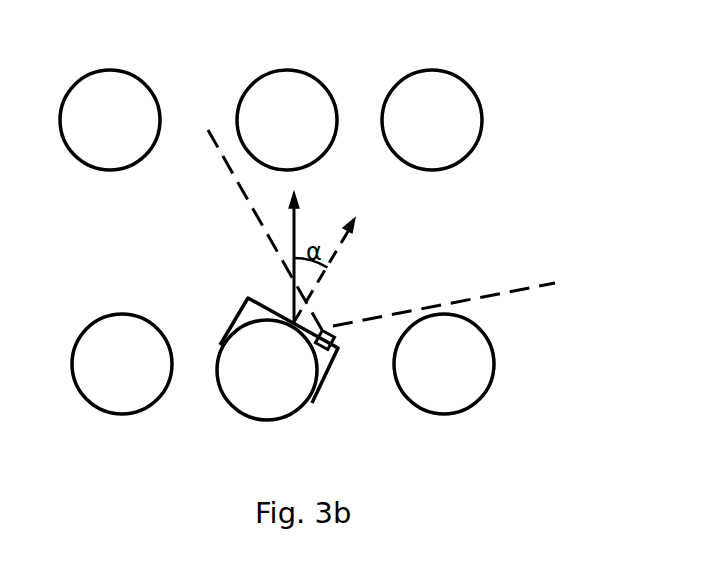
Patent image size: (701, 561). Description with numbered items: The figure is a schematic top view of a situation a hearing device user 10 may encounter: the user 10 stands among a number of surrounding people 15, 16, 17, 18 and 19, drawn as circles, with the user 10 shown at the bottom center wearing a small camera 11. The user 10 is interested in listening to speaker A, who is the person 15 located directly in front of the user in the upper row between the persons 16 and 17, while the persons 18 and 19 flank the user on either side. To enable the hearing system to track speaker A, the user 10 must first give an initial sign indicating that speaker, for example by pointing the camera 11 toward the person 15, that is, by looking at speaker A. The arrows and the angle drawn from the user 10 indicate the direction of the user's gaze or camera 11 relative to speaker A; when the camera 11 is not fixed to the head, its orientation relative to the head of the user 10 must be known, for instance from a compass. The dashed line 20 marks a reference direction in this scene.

The hearing device user 10 is at (290, 421).
The camera 11 is at (343, 342).
The person 15 is at (320, 71).
The person 16 is at (130, 67).
The person 17 is at (475, 78).
The person 18 is at (98, 416).
The person 19 is at (475, 412).
The reference line 20 is at (284, 225).